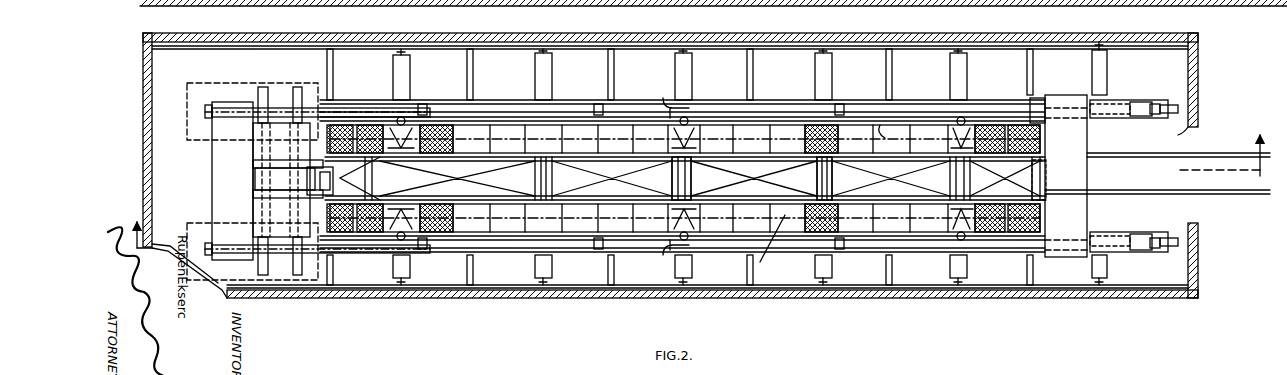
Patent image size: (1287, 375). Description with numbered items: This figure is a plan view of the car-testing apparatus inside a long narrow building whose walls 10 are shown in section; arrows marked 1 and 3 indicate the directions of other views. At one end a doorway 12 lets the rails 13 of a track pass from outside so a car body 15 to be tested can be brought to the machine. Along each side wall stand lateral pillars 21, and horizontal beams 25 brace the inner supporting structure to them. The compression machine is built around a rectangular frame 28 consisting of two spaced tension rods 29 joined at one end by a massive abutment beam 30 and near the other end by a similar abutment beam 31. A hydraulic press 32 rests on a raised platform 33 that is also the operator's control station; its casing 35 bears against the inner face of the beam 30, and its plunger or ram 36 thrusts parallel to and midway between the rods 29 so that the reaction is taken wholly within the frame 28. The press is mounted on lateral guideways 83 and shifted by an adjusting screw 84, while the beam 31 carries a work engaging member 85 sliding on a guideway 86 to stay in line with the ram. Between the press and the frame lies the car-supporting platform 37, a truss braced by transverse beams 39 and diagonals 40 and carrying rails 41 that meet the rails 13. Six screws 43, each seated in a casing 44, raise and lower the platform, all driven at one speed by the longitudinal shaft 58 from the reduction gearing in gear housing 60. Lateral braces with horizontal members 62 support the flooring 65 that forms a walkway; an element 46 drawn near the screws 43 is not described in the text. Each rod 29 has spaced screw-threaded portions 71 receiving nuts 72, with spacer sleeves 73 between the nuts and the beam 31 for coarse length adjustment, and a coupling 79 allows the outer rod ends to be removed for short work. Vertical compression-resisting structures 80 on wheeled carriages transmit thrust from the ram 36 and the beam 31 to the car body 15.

The section line 1- 1 is at (698, 186).
The section line 3- 3 is at (703, 12).
The walls of the building 10 is at (843, 20).
The doorway 12 is at (1210, 104).
The rails of the track 13 is at (1155, 188).
The rail car body 15 is at (772, 246).
The lateral pillars 21 is at (410, 60).
The horizontal beams 25 is at (333, 85).
The rectangular frame 28 is at (212, 163).
The tension rods 29 is at (724, 112).
The abutment beam 30 is at (212, 183).
The abutment beam 31 is at (1087, 135).
The hydraulic press 32 is at (282, 123).
The platform 33 is at (292, 144).
The casing 35 is at (288, 180).
The plunger or ram 36 is at (318, 168).
The platform 37 is at (892, 132).
The transverse beams 39 is at (687, 178).
The diagonals 40 is at (734, 180).
The rails 41 is at (535, 161).
The screws 43 is at (443, 125).
The casing 44 is at (391, 0).
The pivot 46 is at (672, 134).
The longitudinal shaft 58 is at (613, 0).
The gear housing 60 is at (706, 0).
The horizontal member 62 is at (523, 135).
The flooring 65 is at (445, 125).
The screw-threaded portions 71 is at (598, 104).
The nuts 72 is at (1137, 102).
The spacer sleeves 73 is at (1108, 104).
The coupling 79 is at (678, 99).
The vertical compression-resisting structure 80 is at (1066, 202).
The lateral guideways 83 is at (267, 276).
The adjusting screw 84 is at (300, 262).
The work engaging member 85 is at (1046, 172).
The guideway 86 is at (1040, 98).